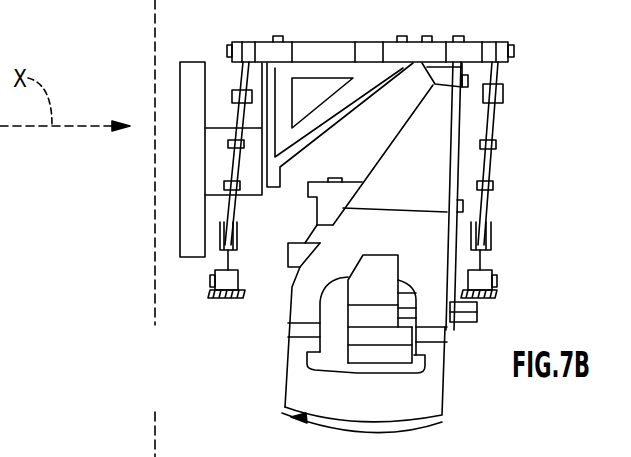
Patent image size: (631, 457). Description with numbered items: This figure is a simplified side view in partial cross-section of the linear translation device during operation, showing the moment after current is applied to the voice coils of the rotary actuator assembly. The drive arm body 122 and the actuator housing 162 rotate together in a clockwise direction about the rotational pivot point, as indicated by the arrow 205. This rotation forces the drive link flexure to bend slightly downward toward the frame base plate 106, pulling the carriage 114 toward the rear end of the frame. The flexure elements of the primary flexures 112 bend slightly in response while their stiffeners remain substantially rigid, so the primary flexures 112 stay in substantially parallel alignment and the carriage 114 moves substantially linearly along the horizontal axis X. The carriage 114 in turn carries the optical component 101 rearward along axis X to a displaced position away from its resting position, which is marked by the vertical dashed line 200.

The optical component 101 is at (180, 93).
The vertical line 200 is at (160, 30).
The carriage 114 is at (433, 50).
The primary flexures 112 is at (236, 203).
The drive arm body 122 is at (438, 163).
The frame base plate 106 is at (237, 292).
The actuator housing 162 is at (430, 390).
The arrow 205 is at (398, 430).